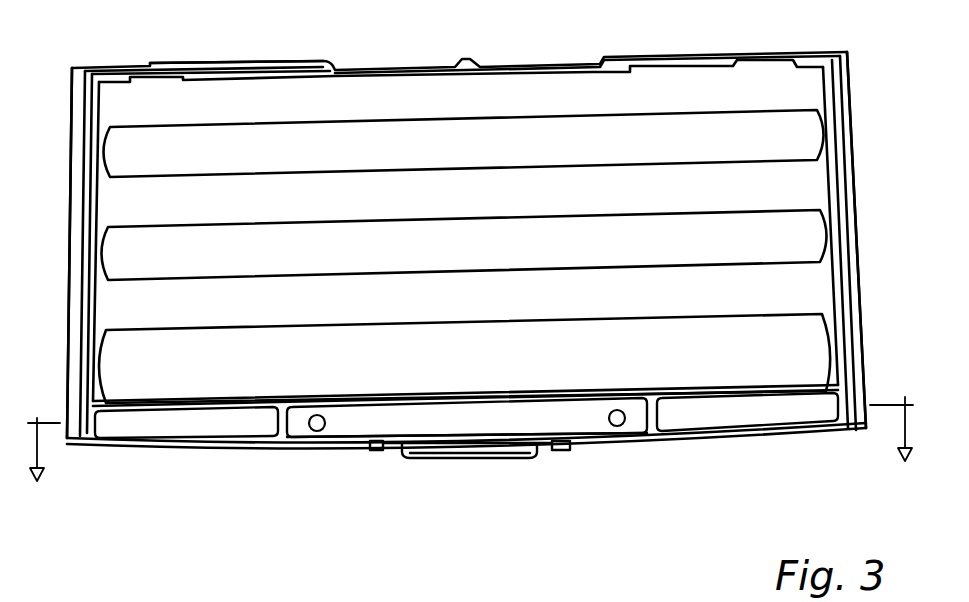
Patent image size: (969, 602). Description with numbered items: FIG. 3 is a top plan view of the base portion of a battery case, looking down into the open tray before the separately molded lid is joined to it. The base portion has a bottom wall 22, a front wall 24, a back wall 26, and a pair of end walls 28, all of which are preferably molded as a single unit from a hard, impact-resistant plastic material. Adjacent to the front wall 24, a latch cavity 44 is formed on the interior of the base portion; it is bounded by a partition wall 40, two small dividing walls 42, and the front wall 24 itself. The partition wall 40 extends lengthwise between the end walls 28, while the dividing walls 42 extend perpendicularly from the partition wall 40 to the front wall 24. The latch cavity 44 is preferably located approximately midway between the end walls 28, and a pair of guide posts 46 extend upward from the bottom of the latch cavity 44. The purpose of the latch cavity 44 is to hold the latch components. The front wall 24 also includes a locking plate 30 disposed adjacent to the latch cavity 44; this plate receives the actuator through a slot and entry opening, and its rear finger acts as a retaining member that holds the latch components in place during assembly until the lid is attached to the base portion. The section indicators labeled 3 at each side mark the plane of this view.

The bottom wall 22 is at (466, 263).
The front wall 24 is at (777, 437).
The back wall 26 is at (268, 64).
The end walls 28 is at (843, 170).
The locking plate 30 is at (440, 458).
The partition wall 40 is at (527, 398).
The dividing walls 42 is at (277, 422).
The latch cavity 44 is at (562, 423).
The guide posts 46 is at (317, 432).
The section line 3- 3 is at (471, 422).